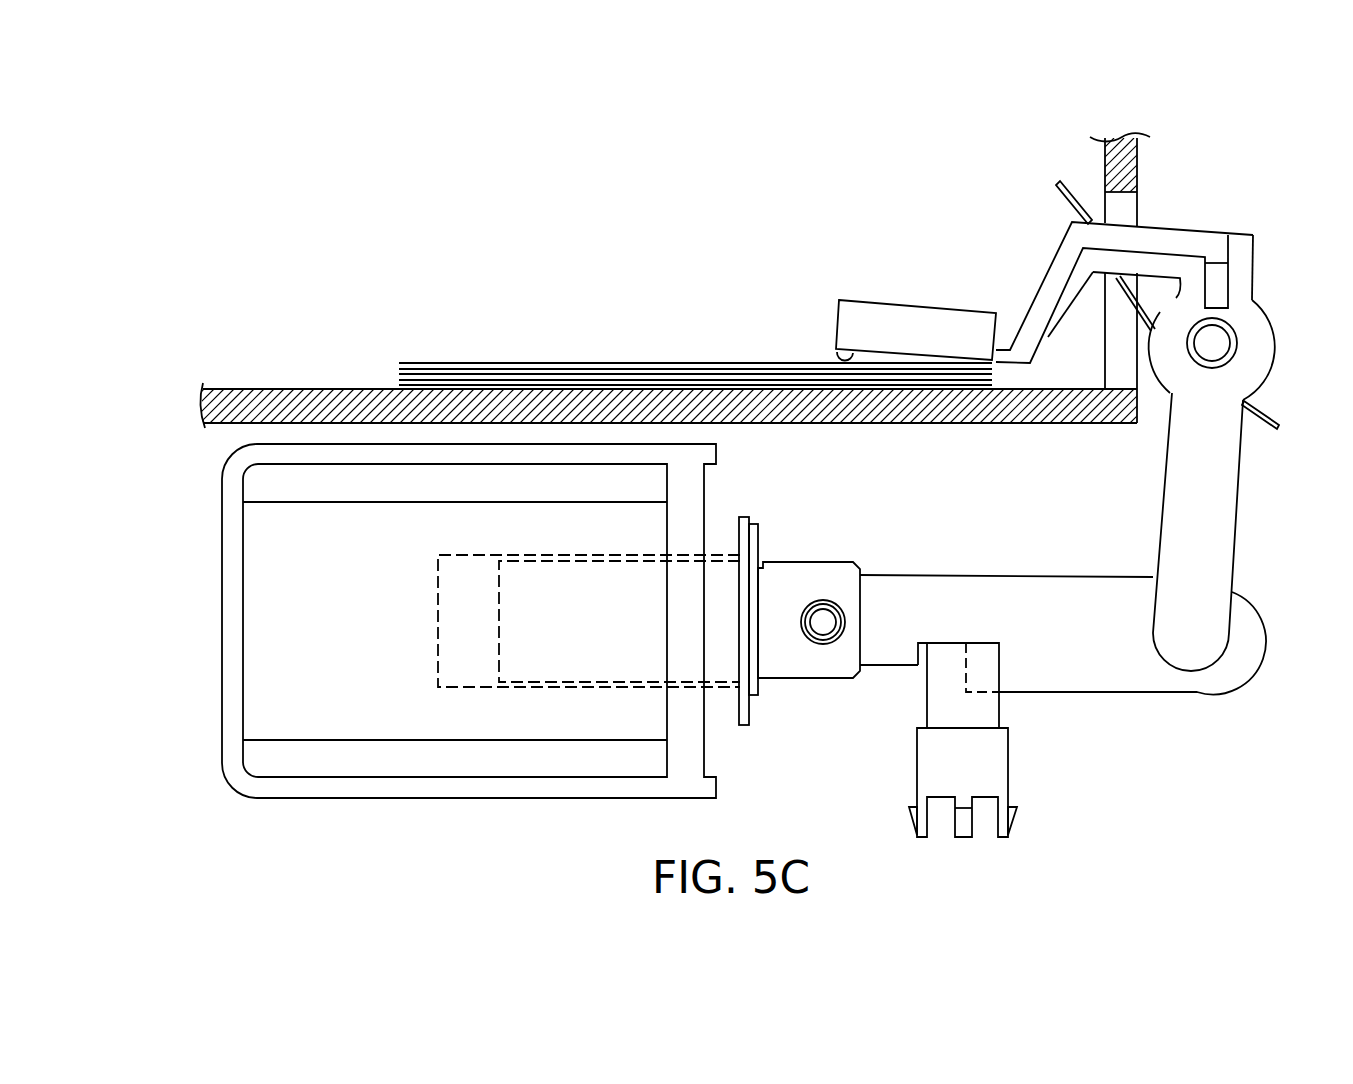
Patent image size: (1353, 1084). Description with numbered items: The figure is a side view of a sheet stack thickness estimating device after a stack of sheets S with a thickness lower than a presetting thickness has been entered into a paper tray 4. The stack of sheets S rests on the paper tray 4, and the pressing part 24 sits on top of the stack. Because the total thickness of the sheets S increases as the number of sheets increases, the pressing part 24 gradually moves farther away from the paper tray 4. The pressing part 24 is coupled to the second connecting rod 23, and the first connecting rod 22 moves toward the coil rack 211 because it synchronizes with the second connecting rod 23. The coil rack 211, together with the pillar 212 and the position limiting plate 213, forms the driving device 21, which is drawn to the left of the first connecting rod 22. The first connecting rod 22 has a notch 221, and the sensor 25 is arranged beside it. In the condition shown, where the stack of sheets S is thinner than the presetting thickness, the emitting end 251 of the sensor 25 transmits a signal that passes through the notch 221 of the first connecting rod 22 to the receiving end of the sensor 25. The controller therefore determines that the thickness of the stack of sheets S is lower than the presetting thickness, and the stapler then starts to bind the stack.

The paper tray 4 is at (320, 389).
The sheets S is at (543, 363).
The pressing part 24 is at (918, 322).
The second connecting rod 23 is at (1222, 515).
The driving device 21 is at (451, 649).
The coil rack 211 is at (405, 715).
The pillar 212 is at (722, 660).
The position limiting plate 213 is at (752, 548).
The first connecting rod 22 is at (1063, 641).
The notch 221 is at (940, 655).
The sensor 25 is at (1040, 766).
The emitting end 251 is at (963, 658).